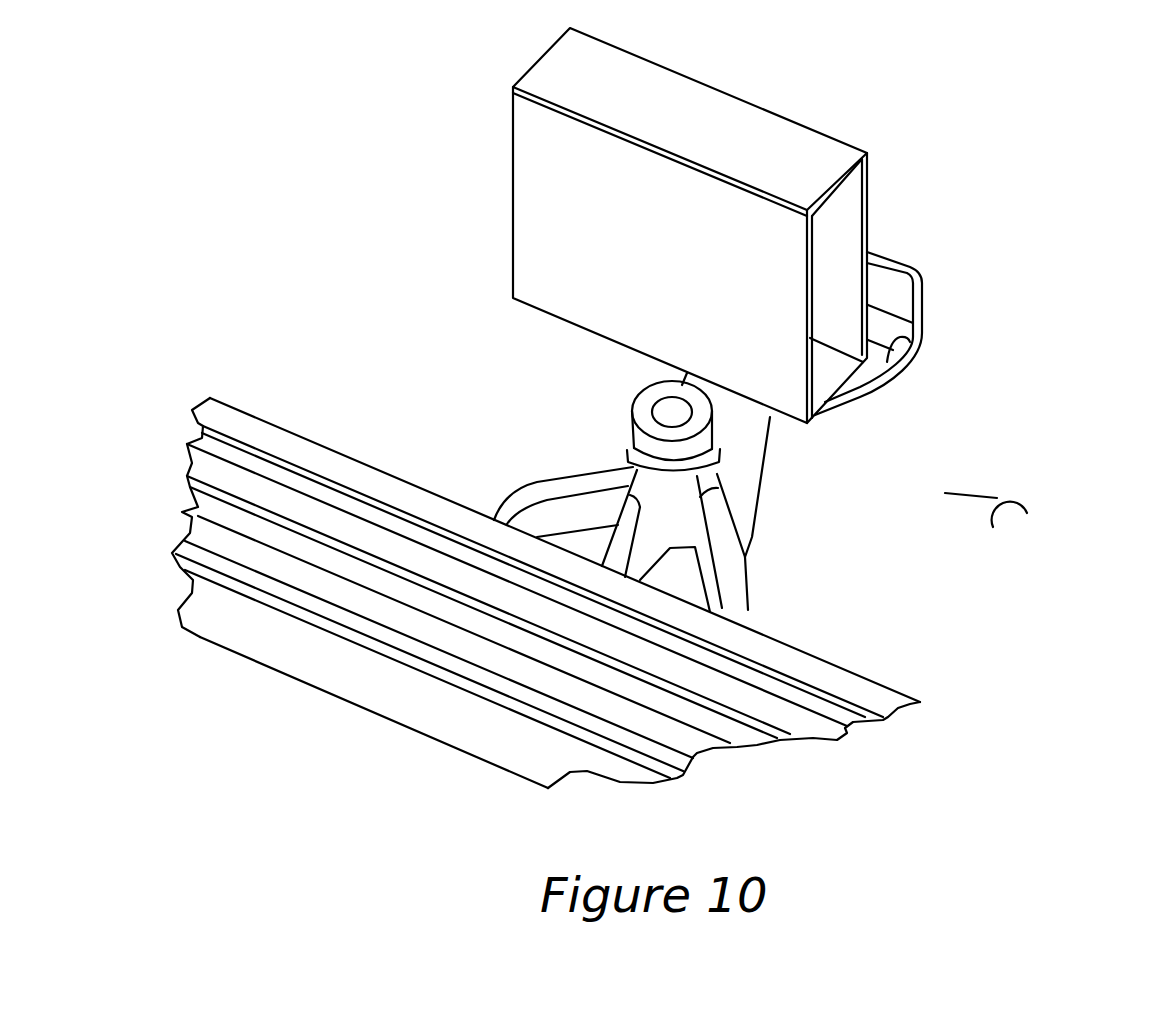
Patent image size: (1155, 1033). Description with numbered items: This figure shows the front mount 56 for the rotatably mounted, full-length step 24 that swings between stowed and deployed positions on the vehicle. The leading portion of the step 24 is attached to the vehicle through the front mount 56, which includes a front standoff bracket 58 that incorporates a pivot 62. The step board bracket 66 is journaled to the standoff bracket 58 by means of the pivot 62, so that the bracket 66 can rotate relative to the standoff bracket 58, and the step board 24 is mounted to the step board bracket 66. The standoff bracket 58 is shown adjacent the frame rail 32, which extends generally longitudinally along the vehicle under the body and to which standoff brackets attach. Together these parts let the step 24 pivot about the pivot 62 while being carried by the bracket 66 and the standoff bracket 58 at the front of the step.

The step 24 is at (248, 427).
The frame rail 32 is at (527, 200).
The front mount 56 is at (945, 493).
The front standoff bracket 58 is at (917, 343).
The pivot 62 is at (642, 417).
The step board bracket 66 is at (540, 489).